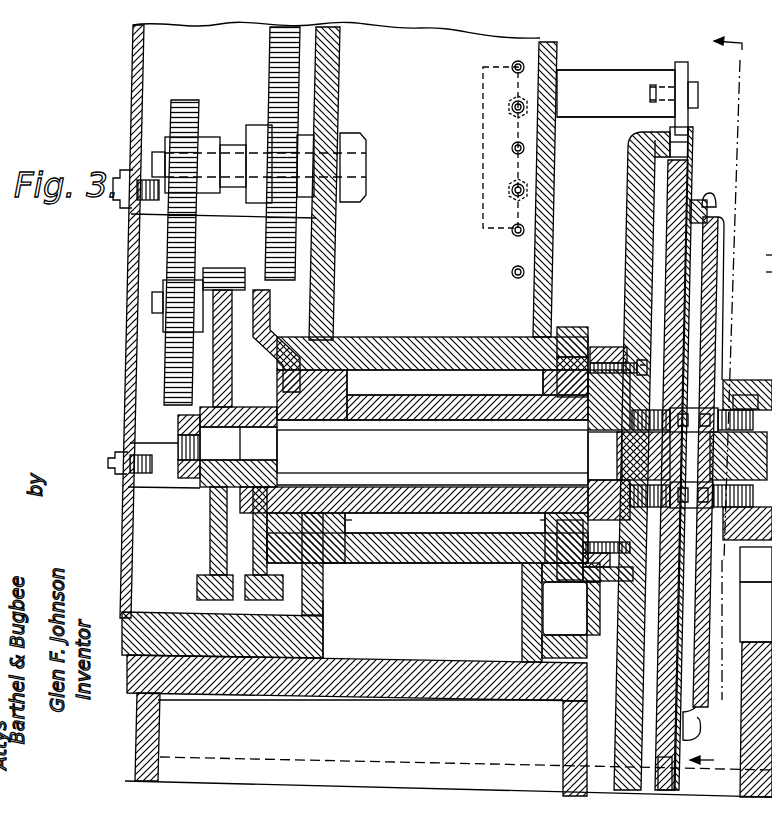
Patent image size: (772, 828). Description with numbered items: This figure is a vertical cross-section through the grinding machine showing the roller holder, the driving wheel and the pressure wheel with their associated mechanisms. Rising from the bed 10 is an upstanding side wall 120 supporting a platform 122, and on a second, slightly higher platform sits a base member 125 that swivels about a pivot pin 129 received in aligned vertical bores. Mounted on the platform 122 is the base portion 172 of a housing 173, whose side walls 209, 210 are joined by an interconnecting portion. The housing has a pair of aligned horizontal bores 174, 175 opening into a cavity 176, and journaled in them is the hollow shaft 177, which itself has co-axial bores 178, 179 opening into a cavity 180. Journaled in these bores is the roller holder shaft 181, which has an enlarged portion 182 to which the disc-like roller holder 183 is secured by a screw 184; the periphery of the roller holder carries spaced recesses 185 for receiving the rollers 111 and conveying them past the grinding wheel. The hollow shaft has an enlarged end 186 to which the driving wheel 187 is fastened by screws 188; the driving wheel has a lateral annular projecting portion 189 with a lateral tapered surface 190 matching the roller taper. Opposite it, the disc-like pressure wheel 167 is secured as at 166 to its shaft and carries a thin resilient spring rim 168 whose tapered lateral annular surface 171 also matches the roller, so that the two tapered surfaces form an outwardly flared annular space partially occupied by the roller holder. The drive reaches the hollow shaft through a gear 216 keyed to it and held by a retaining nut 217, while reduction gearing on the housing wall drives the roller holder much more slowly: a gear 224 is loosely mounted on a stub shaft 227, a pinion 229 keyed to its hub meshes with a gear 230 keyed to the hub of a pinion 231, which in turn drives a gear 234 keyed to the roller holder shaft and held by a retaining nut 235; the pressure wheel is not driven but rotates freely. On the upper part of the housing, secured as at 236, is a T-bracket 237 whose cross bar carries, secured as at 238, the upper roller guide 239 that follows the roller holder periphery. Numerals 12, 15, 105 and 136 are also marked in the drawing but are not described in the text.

The bed 10 is at (713, 399).
The ring 12 is at (708, 190).
The member 15 is at (766, 248).
The knob 105 is at (716, 201).
The roller 111 is at (688, 136).
The side wall 120 is at (158, 730).
The platform 122 is at (358, 700).
The base member 125 is at (756, 689).
The pivot pin 129 is at (747, 623).
The member 136 is at (765, 265).
The securing means for pressure wheel 166 is at (744, 380).
The pressure wheel 167 is at (718, 293).
The spring rim 168 is at (695, 170).
The tapered lateral annular surface 171 is at (688, 145).
The base portion 172 is at (158, 620).
The housing 173 is at (558, 56).
The horizontal bore 174 is at (345, 520).
The horizontal bore 175 is at (540, 522).
The cavity 176 is at (414, 525).
The hollow shaft 177 is at (448, 394).
The co-axial bore 178 is at (328, 487).
The co-axial bore 179 is at (580, 478).
The cavity 180 is at (440, 430).
The roller holder shaft 181 is at (432, 451).
The enlarged portion 182 is at (593, 418).
The roller holder 183 is at (700, 322).
The screw 184 is at (629, 476).
The recess 185 is at (675, 780).
The enlarged end 186 is at (602, 347).
The driving wheel 187 is at (626, 250).
The screw 188 is at (625, 345).
The lateral annular projecting portion 189 is at (668, 174).
The lateral tapered surface 190 is at (668, 150).
The side wall 209 is at (338, 75).
The side wall 210 is at (535, 303).
The gear 216 is at (290, 598).
The retaining nut 217 is at (210, 530).
The gear 224 is at (272, 72).
The stub shaft 227 is at (238, 140).
The pinion 229 is at (186, 100).
The gear 230 is at (170, 365).
The pinion 231 is at (224, 268).
The gear 234 is at (210, 558).
The retaining nut 235 is at (190, 480).
The securing means for T-bracket 236 is at (512, 114).
The T-bracket 237 is at (630, 70).
The securing means for roller guide 238 is at (698, 90).
The upper roller guide 239 is at (681, 68).